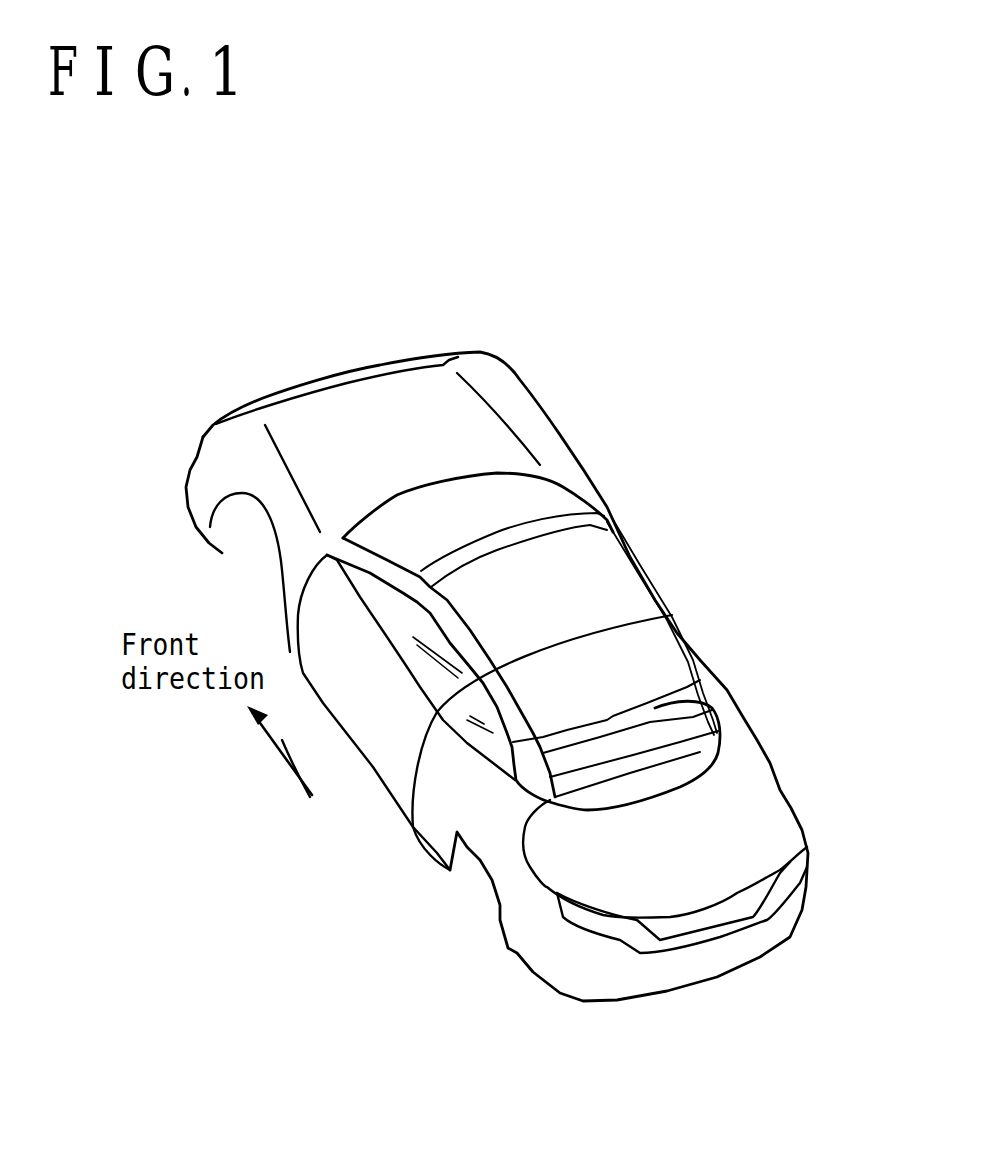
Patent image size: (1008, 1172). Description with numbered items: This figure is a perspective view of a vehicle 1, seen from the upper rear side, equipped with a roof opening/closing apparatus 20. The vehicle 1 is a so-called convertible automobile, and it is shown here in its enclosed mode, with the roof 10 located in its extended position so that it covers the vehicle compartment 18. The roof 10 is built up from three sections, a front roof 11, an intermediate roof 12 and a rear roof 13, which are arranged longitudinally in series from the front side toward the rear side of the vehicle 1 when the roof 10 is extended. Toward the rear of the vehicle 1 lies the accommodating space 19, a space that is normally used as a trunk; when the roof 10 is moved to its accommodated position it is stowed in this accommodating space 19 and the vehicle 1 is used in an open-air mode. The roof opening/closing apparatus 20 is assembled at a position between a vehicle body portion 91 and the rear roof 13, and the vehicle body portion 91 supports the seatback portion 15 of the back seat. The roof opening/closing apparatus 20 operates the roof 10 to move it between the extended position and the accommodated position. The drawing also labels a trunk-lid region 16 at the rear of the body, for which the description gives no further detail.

The vehicle 1 is at (561, 406).
The roof 10 is at (627, 588).
The front roof 11 is at (598, 562).
The intermediate roof 12 is at (657, 643).
The rear roof 13 is at (706, 683).
The seatback portion 15 is at (700, 707).
The vehicle body portion 91 is at (682, 730).
The roof opening/closing apparatus 20 is at (697, 752).
The trunk lid 16 is at (767, 813).
The accommodating space 19 is at (719, 845).
The vehicle compartment 18 is at (449, 678).